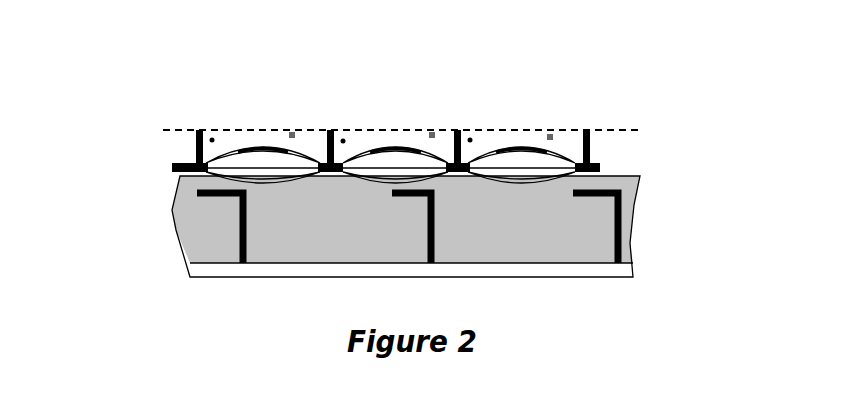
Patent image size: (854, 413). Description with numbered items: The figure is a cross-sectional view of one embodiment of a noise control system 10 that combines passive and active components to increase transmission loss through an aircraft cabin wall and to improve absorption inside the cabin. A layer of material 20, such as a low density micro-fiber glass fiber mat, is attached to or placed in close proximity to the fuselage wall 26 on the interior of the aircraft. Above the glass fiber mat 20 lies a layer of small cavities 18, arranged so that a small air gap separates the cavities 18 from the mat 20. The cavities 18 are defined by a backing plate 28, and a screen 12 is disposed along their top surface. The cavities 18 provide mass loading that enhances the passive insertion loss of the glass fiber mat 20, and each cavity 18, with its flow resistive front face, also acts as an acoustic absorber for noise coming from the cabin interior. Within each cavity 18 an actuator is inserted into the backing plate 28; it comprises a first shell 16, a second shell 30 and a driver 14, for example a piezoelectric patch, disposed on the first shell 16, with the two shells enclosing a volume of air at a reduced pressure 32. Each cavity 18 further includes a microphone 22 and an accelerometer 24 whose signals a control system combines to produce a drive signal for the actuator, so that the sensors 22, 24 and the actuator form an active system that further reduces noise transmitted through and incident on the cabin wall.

The noise control system 10 is at (150, 82).
The screen 12 is at (255, 136).
The driver 14 is at (391, 147).
The first shell 16 is at (438, 160).
The cavities 18 is at (316, 145).
The layer of material 20 is at (628, 245).
The microphone 22 is at (470, 140).
The accelerometer 24 is at (552, 133).
The fuselage wall 26 is at (633, 272).
The backing plate 28 is at (597, 168).
The second shell 30 is at (520, 182).
The volume of air at a reduced pressure 32 is at (257, 163).